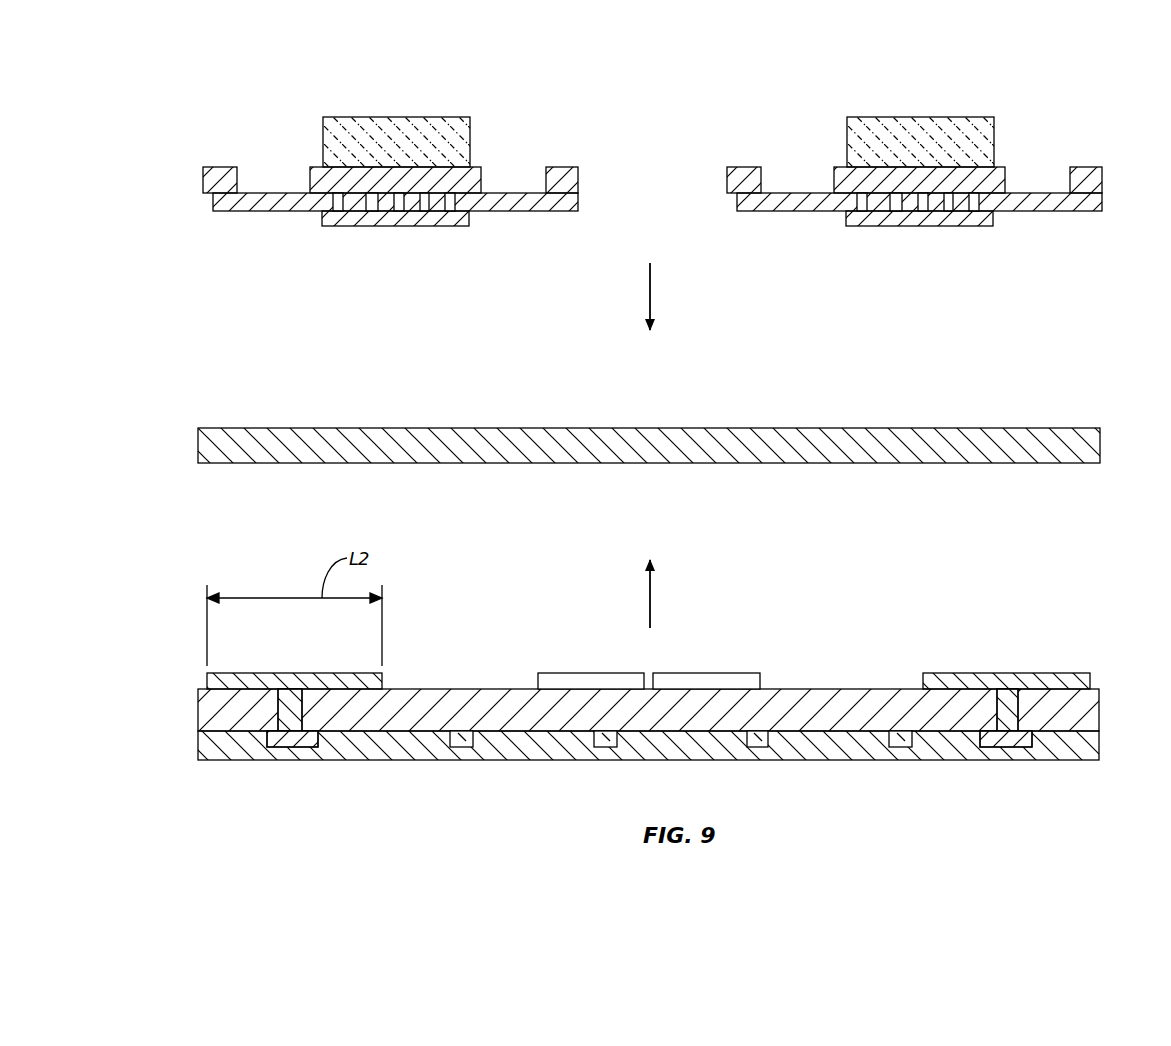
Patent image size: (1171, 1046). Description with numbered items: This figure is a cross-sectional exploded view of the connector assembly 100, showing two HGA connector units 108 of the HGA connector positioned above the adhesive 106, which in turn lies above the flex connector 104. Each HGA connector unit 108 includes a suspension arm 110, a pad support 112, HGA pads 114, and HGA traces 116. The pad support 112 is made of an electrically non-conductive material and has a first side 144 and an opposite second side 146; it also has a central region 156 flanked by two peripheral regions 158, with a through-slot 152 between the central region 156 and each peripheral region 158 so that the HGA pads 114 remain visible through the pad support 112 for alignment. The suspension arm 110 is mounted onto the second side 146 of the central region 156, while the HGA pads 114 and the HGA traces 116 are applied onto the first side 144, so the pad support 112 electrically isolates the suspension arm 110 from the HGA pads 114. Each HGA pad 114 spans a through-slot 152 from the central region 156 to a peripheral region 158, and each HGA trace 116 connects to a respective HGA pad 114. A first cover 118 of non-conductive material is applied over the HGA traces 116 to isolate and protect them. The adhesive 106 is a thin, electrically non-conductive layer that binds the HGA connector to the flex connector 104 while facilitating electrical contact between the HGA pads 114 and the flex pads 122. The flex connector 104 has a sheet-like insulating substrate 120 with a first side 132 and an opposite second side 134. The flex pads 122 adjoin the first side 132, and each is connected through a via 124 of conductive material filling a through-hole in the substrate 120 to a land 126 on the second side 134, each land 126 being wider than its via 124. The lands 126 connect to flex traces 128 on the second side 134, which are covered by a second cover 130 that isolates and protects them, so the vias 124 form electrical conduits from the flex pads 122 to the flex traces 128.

The connector assembly 100 is at (226, 811).
The flex connector 104 is at (1095, 640).
The adhesive 106 is at (976, 428).
The HGA connector unit 108 is at (496, 138).
The suspension arm 110 is at (353, 128).
The pad support 112 is at (320, 167).
The HGA pads 114 is at (232, 202).
The HGA traces 116 is at (411, 212).
The first cover 118 is at (468, 222).
The substrate 120 is at (205, 700).
The flex pads 122 is at (268, 686).
The via 124 is at (303, 714).
The lands 126 is at (298, 748).
The flex traces 128 is at (462, 748).
The second cover 130 is at (222, 752).
The first side 132 is at (465, 689).
The second side 134 is at (562, 761).
The first side 144 is at (313, 207).
The second side 146 is at (425, 183).
The through-slot 152 is at (262, 186).
The central region 156 is at (383, 178).
The peripheral regions 158 is at (207, 178).